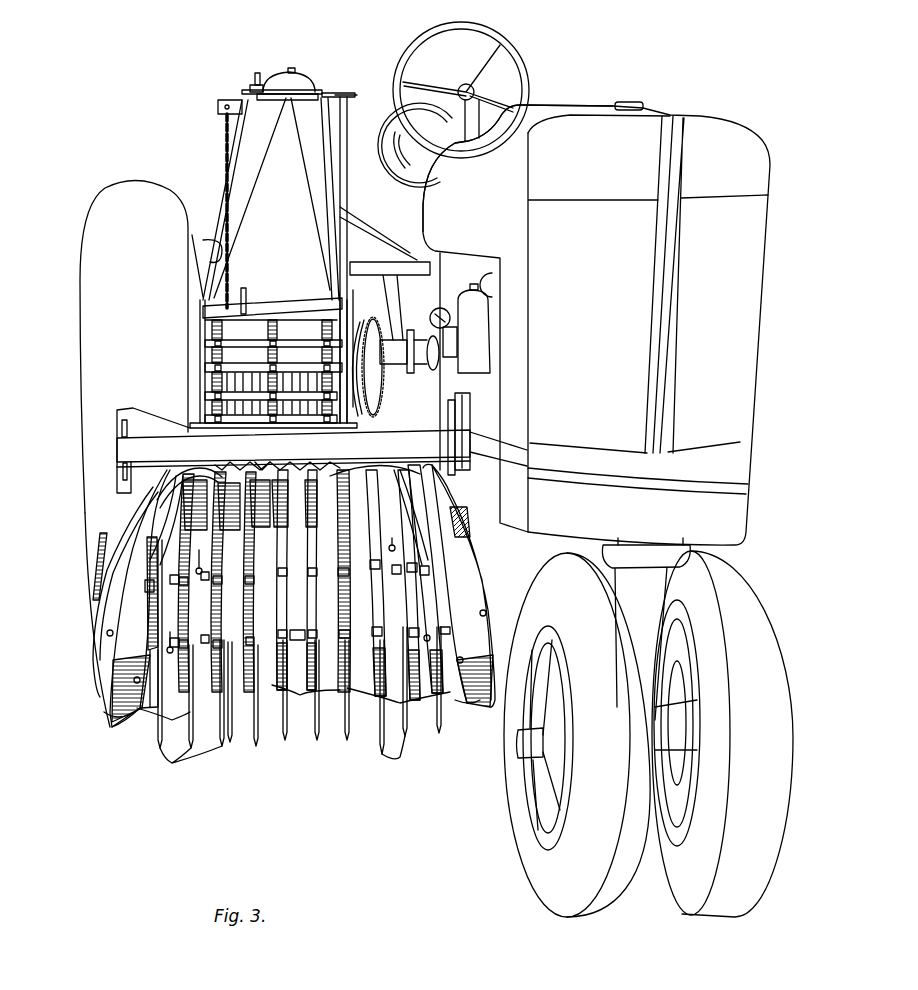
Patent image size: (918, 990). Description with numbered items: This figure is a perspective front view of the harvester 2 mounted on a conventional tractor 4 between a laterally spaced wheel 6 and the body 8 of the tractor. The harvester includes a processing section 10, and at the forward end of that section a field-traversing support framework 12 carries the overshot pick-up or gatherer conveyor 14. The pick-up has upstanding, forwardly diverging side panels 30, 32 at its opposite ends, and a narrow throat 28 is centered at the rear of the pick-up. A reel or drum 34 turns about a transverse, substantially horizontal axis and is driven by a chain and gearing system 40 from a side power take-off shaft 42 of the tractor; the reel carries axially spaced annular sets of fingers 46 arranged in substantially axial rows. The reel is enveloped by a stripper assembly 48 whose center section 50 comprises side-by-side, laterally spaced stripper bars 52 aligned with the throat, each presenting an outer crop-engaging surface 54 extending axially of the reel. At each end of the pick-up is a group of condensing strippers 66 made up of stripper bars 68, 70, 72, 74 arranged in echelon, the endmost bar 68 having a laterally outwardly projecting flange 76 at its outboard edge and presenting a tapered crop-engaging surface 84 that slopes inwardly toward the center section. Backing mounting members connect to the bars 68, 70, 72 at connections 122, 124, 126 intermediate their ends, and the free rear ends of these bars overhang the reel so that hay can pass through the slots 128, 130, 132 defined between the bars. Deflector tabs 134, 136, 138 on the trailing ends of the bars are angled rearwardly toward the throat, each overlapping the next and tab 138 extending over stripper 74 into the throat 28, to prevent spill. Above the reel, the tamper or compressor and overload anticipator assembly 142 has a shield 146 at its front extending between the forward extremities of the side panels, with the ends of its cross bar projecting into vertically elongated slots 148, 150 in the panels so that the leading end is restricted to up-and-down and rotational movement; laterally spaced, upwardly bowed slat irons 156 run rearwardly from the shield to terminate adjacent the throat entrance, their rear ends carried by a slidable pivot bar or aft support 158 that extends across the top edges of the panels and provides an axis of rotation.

The harvester 2 is at (215, 148).
The tractor 4 is at (772, 316).
The wheel 6 is at (100, 198).
The body 8 is at (481, 223).
The processing section 10 is at (269, 294).
The support framework 12 is at (205, 392).
The pick-up conveyor 14 is at (247, 760).
The throat 28 is at (312, 468).
The side panel 30 is at (143, 418).
The side panel 32 is at (450, 403).
The reel 34 is at (452, 613).
The chain and gearing system 40 is at (92, 548).
The power take-off shaft 42 is at (372, 335).
The fingers 46 is at (160, 783).
The stripper assembly 48 is at (237, 694).
The center section 50 is at (306, 702).
The stripper bar 52 is at (259, 586).
The crop-engaging surface 54 is at (289, 645).
The end group of condensing strippers 66 is at (293, 714).
The endmost condensing stripper bar 68 is at (137, 715).
The condensing stripper bar 70 is at (439, 606).
The condensing stripper bar 72 is at (404, 610).
The condensing stripper bar 74 is at (224, 630).
The flange 76 is at (110, 712).
The crop-engaging surface 84 is at (85, 660).
The connection 122 is at (134, 681).
The connection 124 is at (424, 638).
The connection 126 is at (296, 547).
The slot 128 is at (147, 587).
The slot 130 is at (180, 580).
The slot 132 is at (212, 588).
The deflector tab 134 is at (140, 497).
The deflector tab 136 is at (163, 482).
The deflector tab 138 is at (200, 478).
The tamper and overload anticipator assembly 142 is at (118, 450).
The shield 146 is at (467, 430).
The slot 148 is at (125, 427).
The slot 150 is at (463, 458).
The slat iron 156 is at (272, 468).
The pivot bar 158 is at (378, 413).